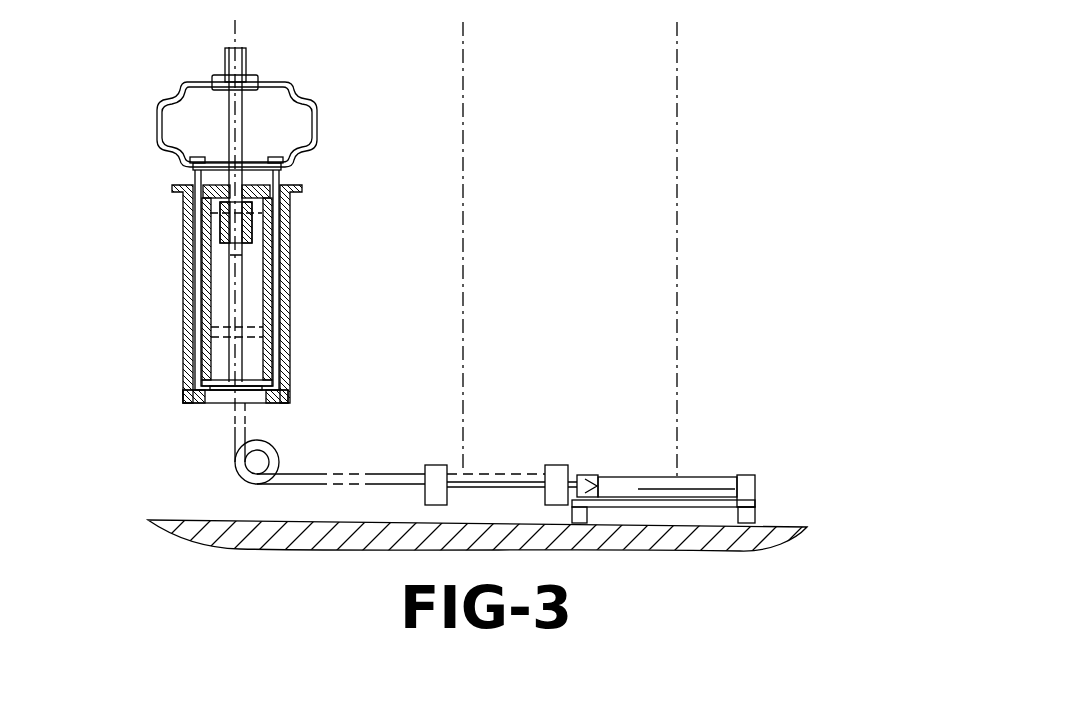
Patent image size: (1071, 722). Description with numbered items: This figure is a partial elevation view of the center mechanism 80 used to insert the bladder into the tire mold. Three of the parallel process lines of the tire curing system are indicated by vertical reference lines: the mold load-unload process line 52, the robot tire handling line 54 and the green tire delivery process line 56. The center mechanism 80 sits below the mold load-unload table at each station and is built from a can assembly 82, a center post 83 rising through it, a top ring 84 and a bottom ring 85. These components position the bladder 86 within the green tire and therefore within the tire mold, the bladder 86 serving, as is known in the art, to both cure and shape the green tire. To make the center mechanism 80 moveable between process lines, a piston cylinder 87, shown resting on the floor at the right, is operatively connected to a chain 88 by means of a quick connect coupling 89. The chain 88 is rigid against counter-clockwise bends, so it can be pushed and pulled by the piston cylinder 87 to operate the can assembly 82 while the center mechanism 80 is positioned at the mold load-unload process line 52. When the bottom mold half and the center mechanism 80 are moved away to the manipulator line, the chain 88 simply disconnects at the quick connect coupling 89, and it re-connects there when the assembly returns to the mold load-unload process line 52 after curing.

The mold load-unload process line 52 is at (237, 29).
The robot tire handling line 54 is at (465, 32).
The green tire delivery process line 56 is at (679, 32).
The center mechanism 80 is at (86, 228).
The can assembly 82 is at (186, 287).
The center post 83 is at (232, 136).
The top ring 84 is at (218, 76).
The bottom ring 85 is at (266, 168).
The bladder 86 is at (312, 113).
The piston cylinder 87 is at (641, 478).
The chain 88 is at (235, 430).
The quick connect coupling 89 is at (440, 466).